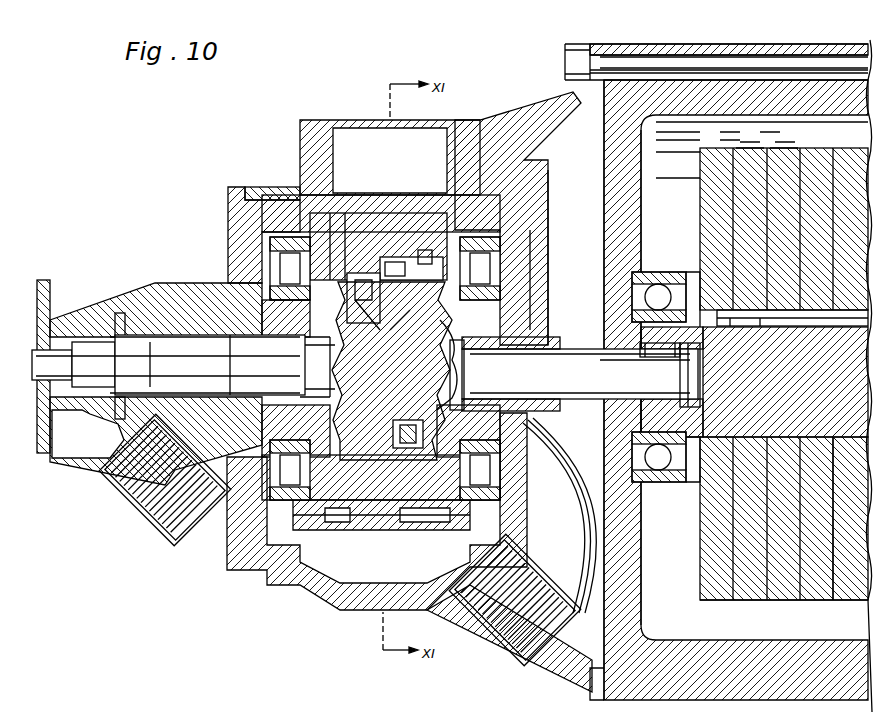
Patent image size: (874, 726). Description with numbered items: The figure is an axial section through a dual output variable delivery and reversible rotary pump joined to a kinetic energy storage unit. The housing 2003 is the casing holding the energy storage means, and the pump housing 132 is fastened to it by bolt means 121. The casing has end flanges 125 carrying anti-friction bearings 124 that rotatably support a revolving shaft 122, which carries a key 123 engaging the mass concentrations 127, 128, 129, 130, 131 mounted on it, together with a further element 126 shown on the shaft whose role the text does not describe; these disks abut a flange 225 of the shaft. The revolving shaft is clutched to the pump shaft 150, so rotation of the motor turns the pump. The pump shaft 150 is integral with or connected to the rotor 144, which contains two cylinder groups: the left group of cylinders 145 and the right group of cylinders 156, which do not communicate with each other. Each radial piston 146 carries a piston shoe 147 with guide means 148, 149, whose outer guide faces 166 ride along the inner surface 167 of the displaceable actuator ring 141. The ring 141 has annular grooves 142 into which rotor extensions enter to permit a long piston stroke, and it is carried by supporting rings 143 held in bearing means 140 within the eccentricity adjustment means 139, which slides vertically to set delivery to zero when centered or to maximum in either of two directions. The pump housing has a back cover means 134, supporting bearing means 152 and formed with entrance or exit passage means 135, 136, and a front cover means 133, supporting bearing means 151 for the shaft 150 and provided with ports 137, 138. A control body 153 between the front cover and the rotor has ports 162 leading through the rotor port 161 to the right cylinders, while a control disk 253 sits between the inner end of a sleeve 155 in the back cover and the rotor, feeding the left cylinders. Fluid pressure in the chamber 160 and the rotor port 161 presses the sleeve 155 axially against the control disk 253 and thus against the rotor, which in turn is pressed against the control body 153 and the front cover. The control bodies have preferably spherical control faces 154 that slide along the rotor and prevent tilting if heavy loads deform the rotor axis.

The bolt means 121 is at (776, 58).
The revolving shaft 122 is at (690, 381).
The key 123 is at (684, 353).
The anti-friction bearings 124 is at (661, 270).
The end flanges 125 is at (625, 586).
The rotor ring 126 is at (716, 300).
The mass concentration 127 is at (712, 150).
The mass concentration 128 is at (752, 150).
The mass concentration 129 is at (796, 150).
The mass concentration 130 is at (805, 601).
The mass concentration 131 is at (838, 604).
The pump housing 132 is at (268, 188).
The front cover means 133 is at (548, 210).
The back cover means 134 is at (236, 206).
The entrance or exit passage means 135 is at (137, 498).
The entrance or exit passage means 136 is at (165, 480).
The entrance or exit port 137 is at (512, 630).
The entrance or exit port 138 is at (515, 600).
The eccentricity adjustment means 139 is at (427, 530).
The bearing means 140 is at (272, 263).
The actuator ring 141 is at (372, 530).
The annular grooves 142 is at (408, 200).
The supporting rings 143 is at (302, 497).
The rotor 144 is at (346, 393).
The cylinders 145 is at (363, 298).
The radial piston 146 is at (399, 273).
The piston shoe 147 is at (360, 200).
The guide means 148 is at (286, 316).
The guide means 149 is at (426, 261).
The pump shaft 150 is at (600, 369).
The bearing means 151 is at (510, 345).
The bearing means 152 is at (192, 350).
The control body 153 is at (448, 365).
The control faces 154 is at (390, 329).
The sleeve 155 is at (182, 300).
The cylinders 156 is at (402, 406).
The chamber 160 is at (97, 426).
The rotor port 161 is at (415, 420).
The ports 162 is at (460, 383).
The outer guide faces 166 is at (387, 222).
The inner surface 167 is at (398, 502).
The flange 225 is at (687, 484).
The control disk 253 is at (322, 367).
The housing 2003 is at (692, 50).